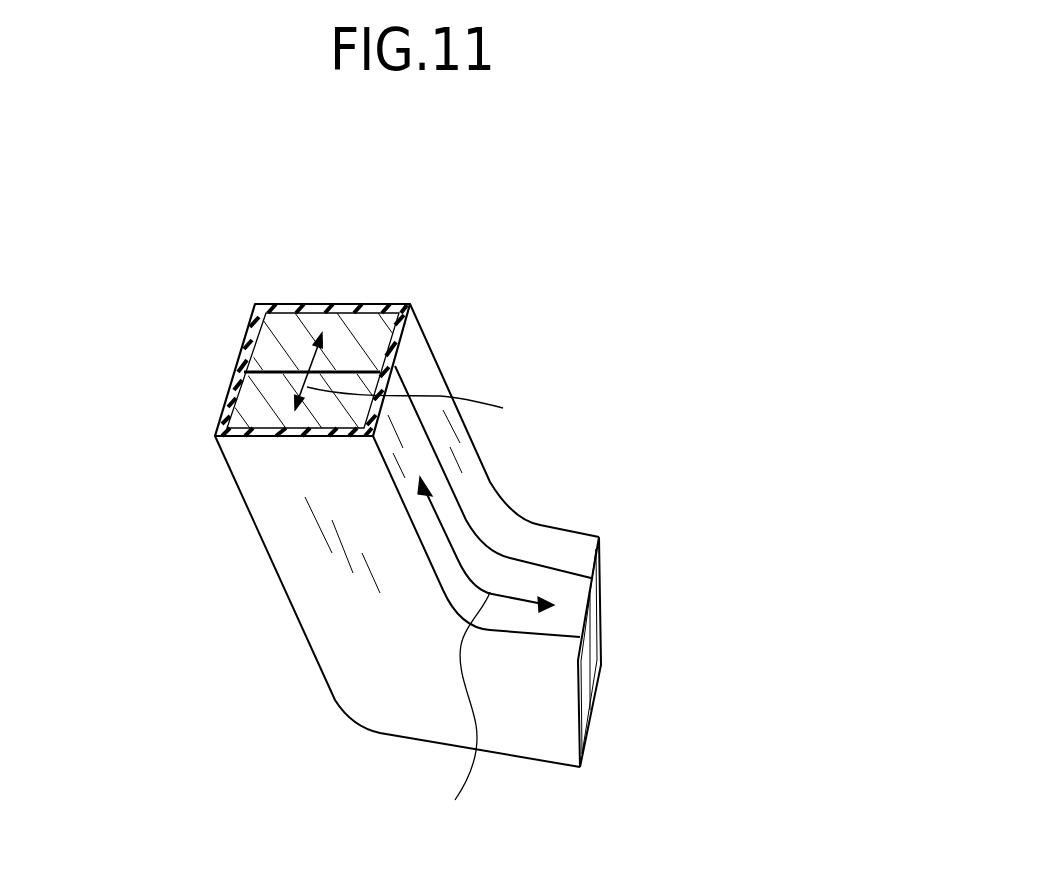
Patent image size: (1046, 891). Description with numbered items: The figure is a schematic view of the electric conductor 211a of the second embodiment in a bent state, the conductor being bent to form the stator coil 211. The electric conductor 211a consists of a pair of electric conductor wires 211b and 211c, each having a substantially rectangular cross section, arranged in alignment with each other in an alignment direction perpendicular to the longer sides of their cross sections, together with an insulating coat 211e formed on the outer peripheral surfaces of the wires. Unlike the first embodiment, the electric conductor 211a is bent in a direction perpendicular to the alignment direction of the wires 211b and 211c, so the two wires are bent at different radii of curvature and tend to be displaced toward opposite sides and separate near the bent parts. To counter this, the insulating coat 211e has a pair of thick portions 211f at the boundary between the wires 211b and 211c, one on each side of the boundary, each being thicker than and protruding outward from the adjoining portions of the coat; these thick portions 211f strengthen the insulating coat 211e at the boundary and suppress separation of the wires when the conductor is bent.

The stator coil 211 is at (458, 189).
The electric conductor 211a is at (589, 652).
The electric conductor wire 211b is at (358, 389).
The electric conductor wire 211c is at (280, 342).
The insulating coat 211e is at (220, 422).
The thick portion 211f is at (232, 372).